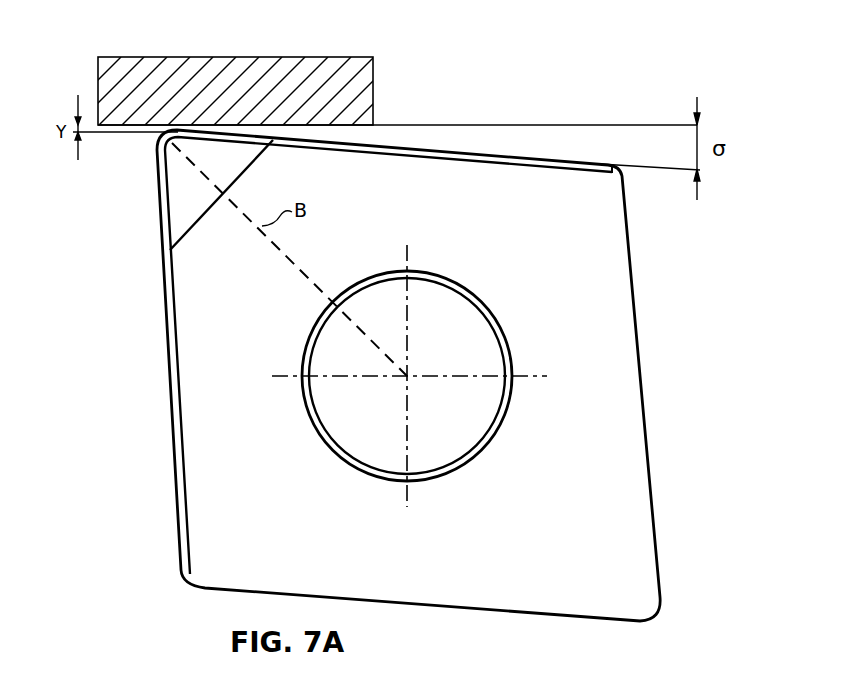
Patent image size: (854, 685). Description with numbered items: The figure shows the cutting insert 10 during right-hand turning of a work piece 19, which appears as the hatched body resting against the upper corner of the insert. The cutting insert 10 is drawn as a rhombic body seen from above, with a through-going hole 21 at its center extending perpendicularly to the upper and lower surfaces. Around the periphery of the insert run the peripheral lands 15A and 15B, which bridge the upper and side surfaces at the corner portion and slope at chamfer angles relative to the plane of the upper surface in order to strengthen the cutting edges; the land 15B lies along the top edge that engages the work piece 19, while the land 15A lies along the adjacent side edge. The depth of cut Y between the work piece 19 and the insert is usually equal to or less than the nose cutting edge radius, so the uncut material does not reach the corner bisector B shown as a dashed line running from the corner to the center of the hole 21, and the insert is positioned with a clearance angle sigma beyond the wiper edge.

The cutting insert 10 is at (680, 357).
The peripheral land 15A is at (160, 170).
The peripheral land 15B is at (203, 130).
The work piece 19 is at (365, 88).
The through-going hole 21 is at (473, 308).